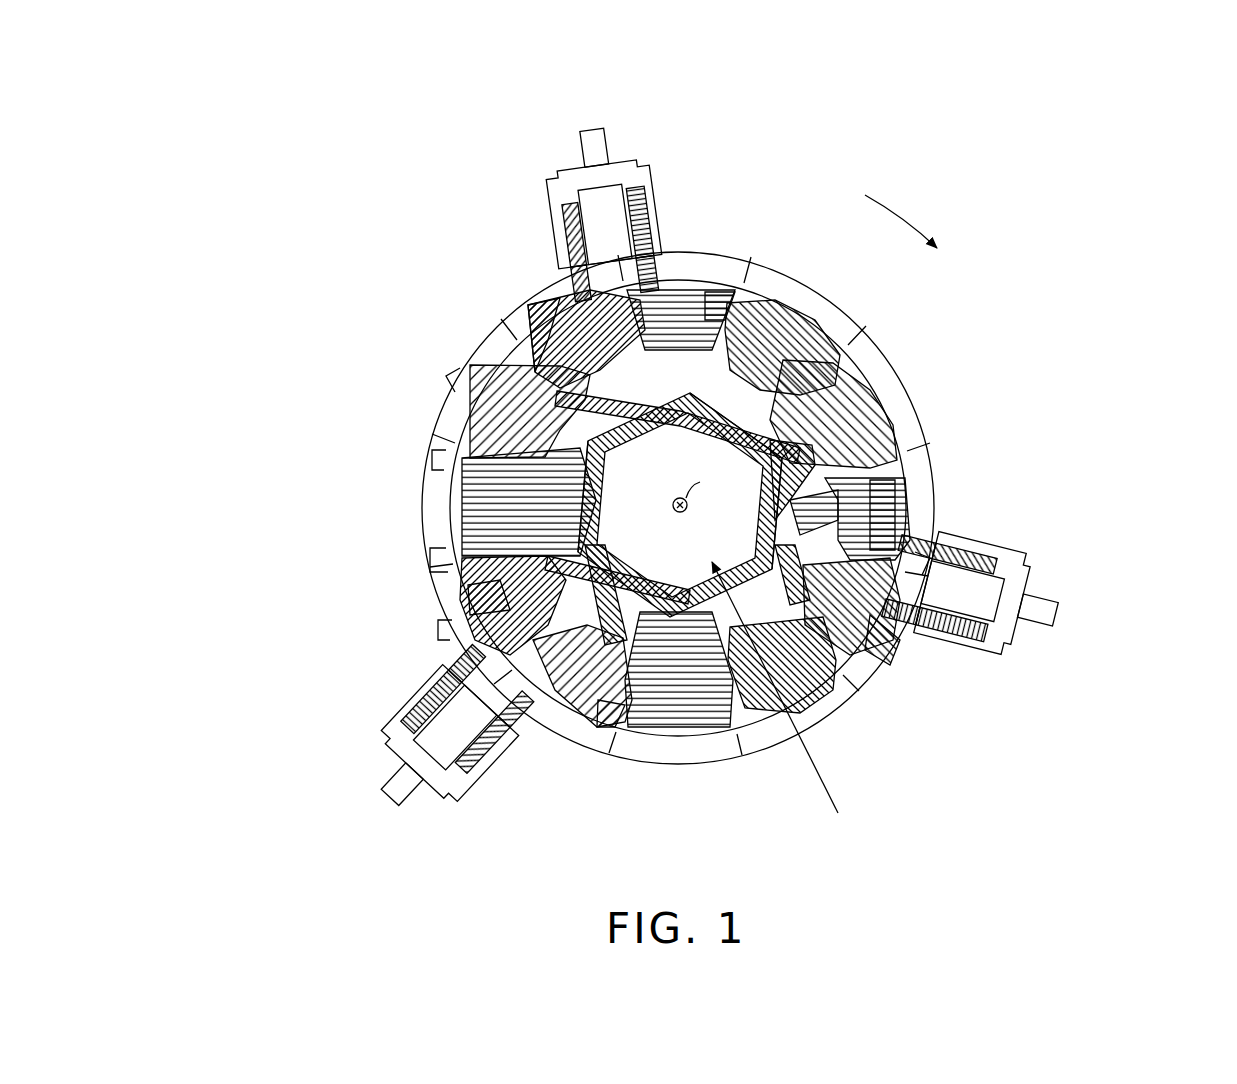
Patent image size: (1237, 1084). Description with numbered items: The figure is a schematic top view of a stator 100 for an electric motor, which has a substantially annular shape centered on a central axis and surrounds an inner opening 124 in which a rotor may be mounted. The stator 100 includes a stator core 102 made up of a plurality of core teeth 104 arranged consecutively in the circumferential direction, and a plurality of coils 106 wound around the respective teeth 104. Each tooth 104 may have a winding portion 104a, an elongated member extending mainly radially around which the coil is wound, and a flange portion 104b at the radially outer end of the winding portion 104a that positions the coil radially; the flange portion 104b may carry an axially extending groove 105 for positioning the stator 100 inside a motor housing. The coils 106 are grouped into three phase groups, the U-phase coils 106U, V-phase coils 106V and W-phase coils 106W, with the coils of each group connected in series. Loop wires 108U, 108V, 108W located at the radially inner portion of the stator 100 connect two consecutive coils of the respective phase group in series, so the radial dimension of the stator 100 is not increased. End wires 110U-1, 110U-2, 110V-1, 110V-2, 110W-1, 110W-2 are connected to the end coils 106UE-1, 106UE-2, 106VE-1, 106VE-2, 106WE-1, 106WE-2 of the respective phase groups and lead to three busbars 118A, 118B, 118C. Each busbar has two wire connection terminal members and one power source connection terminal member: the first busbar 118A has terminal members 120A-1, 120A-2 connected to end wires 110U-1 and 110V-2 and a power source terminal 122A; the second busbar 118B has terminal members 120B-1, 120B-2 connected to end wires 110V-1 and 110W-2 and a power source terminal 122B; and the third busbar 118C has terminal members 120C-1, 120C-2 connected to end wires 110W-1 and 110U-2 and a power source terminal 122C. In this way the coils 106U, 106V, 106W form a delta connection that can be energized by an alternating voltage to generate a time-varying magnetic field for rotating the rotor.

The stator 100 is at (700, 482).
The stator core 102 is at (710, 505).
The core teeth 104 is at (850, 302).
The winding portion 104a is at (455, 460).
The flange portion 104b is at (440, 560).
The groove 105 is at (452, 380).
The coils 106 is at (862, 350).
The U-phase coils 106U is at (576, 300).
The V-phase coils 106V is at (692, 297).
The W-phase coils 106W is at (790, 305).
The U-phase end coil 106UE-1 is at (530, 310).
The U-phase end coil 106UE-2 is at (470, 600).
The V-phase end coil 106VE-1 is at (895, 497).
The V-phase end coil 106VE-2 is at (717, 292).
The W-phase end coil 106WE-1 is at (612, 738).
The W-phase end coil 106WE-2 is at (905, 655).
The U-phase loop wire 108U is at (660, 582).
The V-phase loop wire 108V is at (605, 463).
The W-phase loop wire 108W is at (760, 477).
The U-phase end wire 110U-1 is at (576, 250).
The U-phase end wire 110U-2 is at (447, 678).
The V-phase end wire 110V-1 is at (990, 545).
The V-phase end wire 110V-2 is at (652, 215).
The W-phase end wire 110W-1 is at (510, 760).
The W-phase end wire 110W-2 is at (940, 630).
The first busbar 118A is at (700, 96).
The second busbar 118B is at (1106, 600).
The third busbar 118C is at (300, 746).
The wire connection terminal member 120A-1 is at (570, 200).
The wire connection terminal member 120A-2 is at (640, 162).
The wire connection terminal member 120B-1 is at (1030, 565).
The wire connection terminal member 120B-2 is at (1012, 640).
The wire connection terminal member 120C-1 is at (485, 745).
The wire connection terminal member 120C-2 is at (412, 705).
The power source connection terminal member 122A is at (580, 172).
The power source connection terminal member 122B is at (1042, 622).
The power source connection terminal member 122C is at (408, 792).
The inner opening 124 is at (722, 463).